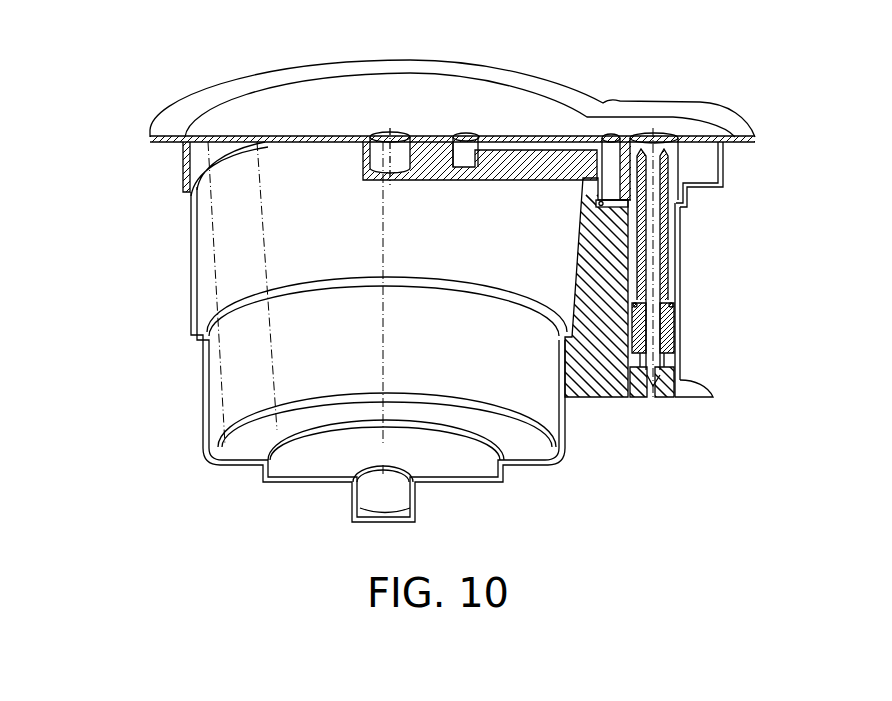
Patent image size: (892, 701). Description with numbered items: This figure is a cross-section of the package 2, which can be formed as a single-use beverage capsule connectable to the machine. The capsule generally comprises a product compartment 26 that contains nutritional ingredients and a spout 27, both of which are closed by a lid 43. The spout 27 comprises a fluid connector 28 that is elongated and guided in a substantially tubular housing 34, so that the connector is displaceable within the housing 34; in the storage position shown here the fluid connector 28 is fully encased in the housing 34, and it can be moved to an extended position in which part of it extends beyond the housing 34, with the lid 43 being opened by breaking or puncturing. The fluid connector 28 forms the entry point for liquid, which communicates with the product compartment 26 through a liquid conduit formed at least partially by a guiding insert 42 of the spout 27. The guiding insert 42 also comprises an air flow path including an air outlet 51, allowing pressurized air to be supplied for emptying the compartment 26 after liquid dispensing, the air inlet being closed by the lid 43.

The package 2 is at (152, 302).
The lid 43 is at (404, 88).
The guiding insert 42 is at (503, 180).
The air outlet 51 is at (387, 180).
The product compartment 26 is at (189, 226).
The spout 27 is at (712, 411).
The fluid connector 28 is at (668, 284).
The housing 34 is at (683, 252).